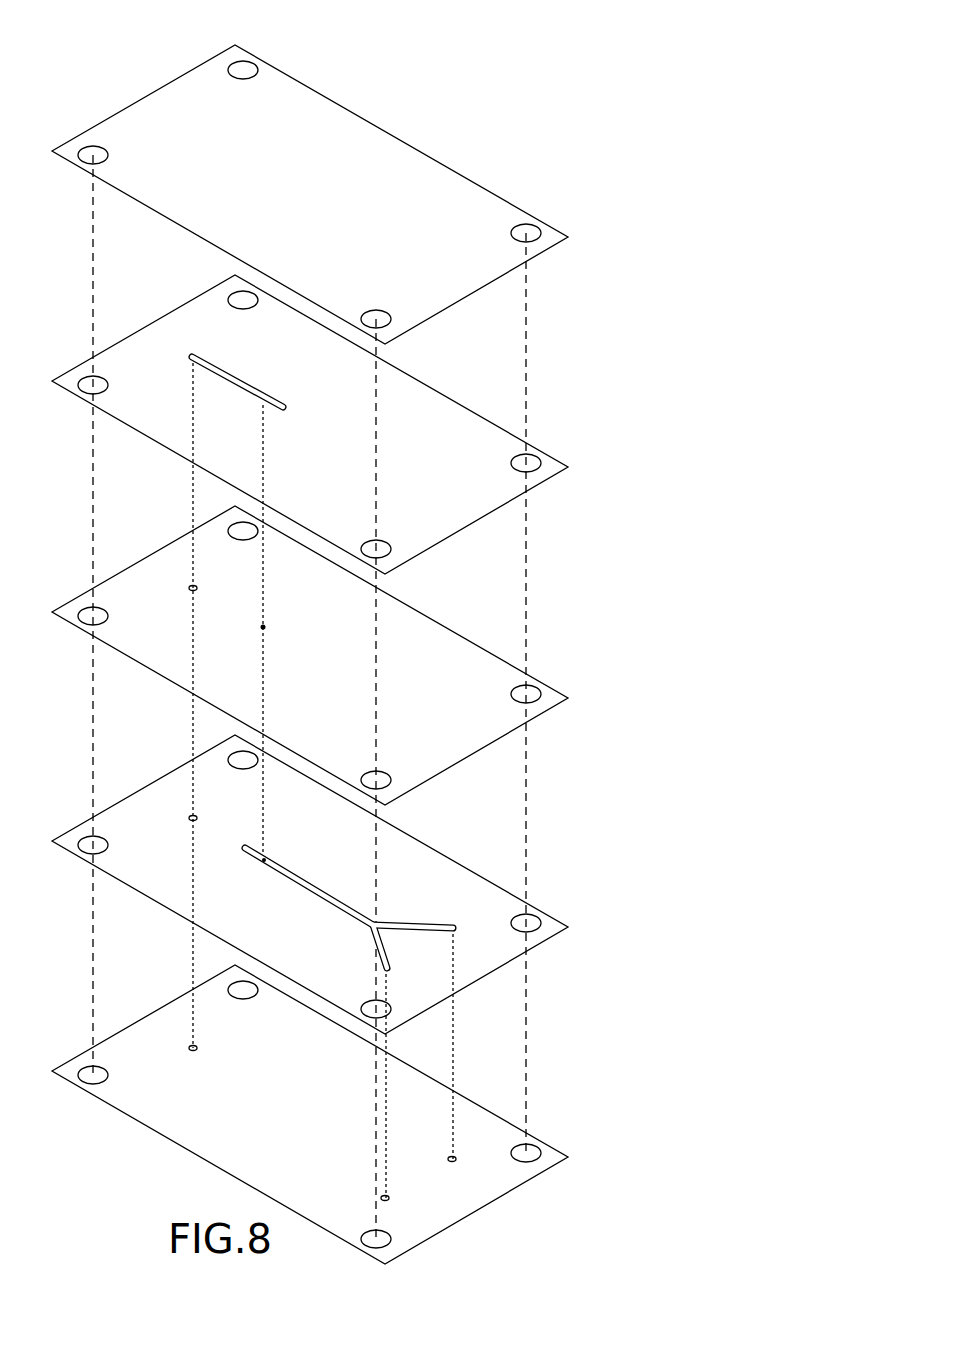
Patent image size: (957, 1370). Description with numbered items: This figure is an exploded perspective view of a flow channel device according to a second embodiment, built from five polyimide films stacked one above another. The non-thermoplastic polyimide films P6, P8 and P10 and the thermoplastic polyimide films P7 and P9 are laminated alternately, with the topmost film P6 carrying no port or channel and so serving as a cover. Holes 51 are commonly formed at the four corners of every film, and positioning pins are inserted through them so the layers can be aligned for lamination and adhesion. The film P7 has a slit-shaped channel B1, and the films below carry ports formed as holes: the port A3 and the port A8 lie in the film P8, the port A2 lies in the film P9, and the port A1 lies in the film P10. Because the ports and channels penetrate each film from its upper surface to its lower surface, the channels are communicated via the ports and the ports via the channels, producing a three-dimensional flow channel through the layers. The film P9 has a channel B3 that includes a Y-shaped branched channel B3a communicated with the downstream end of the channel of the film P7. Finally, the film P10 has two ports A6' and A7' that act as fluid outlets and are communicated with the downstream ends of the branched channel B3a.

The holes 51 is at (232, 64).
The non-thermoplastic polyimide film P6 is at (475, 178).
The thermoplastic polyimide film P7 is at (475, 408).
The non-thermoplastic polyimide film P8 is at (475, 638).
The thermoplastic polyimide film P9 is at (470, 868).
The non-thermoplastic polyimide film P10 is at (473, 1102).
The channel B1 is at (205, 360).
The channel B3 is at (309, 883).
The Y-shaped branched channel B3a is at (388, 932).
The port A3 is at (190, 585).
The port A8 is at (262, 626).
The port A2 is at (191, 817).
The port A1 is at (191, 1047).
The port A7' is at (516, 1180).
The port A6' is at (451, 1219).